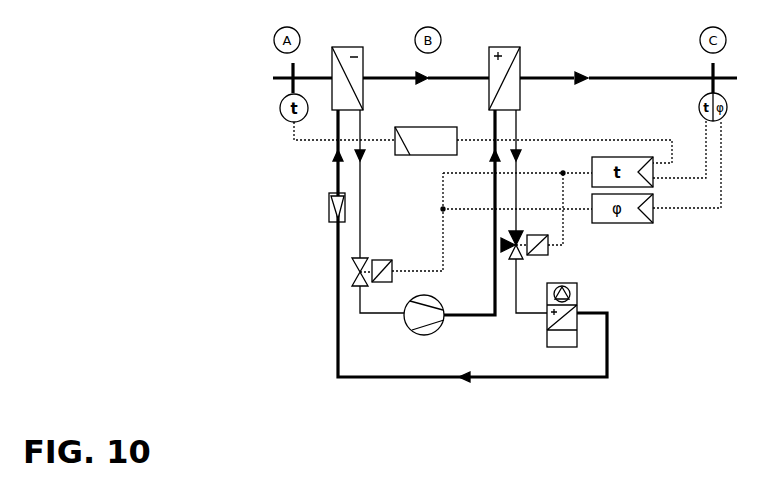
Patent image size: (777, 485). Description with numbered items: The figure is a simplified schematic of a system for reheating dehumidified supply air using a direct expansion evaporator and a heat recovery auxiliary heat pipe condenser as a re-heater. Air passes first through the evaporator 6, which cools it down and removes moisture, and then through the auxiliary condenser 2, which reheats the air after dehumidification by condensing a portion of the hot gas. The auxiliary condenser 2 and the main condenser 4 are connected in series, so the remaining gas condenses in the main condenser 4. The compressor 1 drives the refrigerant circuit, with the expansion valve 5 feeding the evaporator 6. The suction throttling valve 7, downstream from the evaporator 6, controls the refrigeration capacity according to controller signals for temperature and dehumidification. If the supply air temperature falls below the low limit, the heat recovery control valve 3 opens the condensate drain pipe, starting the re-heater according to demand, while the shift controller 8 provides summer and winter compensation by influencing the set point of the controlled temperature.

The compressor 1 is at (424, 324).
The auxiliary condenser 2 is at (512, 78).
The heat recovery control valve 3 is at (532, 216).
The main condenser 4 is at (562, 308).
The expansion valve 5 is at (330, 207).
The evaporator 6 is at (356, 78).
The suction throttling valve 7 is at (397, 229).
The shift controller 8 is at (426, 133).